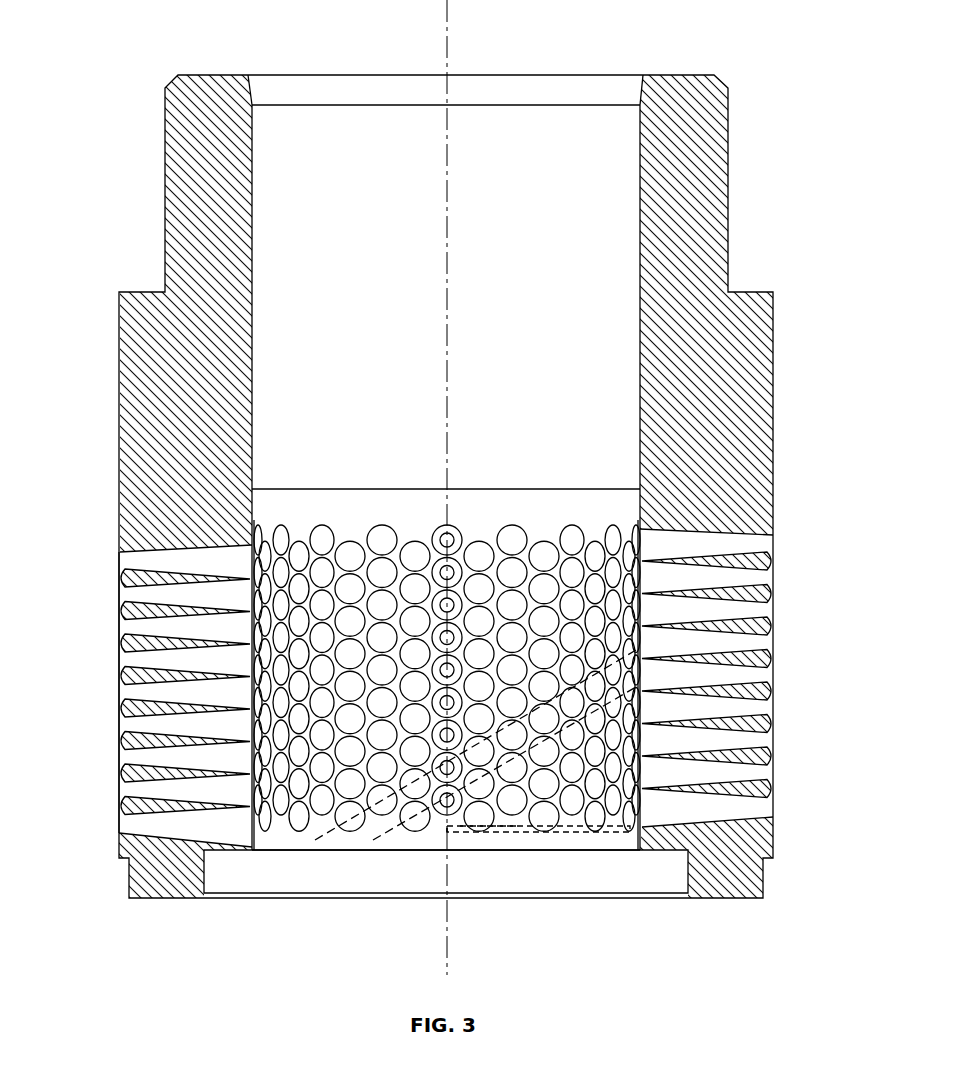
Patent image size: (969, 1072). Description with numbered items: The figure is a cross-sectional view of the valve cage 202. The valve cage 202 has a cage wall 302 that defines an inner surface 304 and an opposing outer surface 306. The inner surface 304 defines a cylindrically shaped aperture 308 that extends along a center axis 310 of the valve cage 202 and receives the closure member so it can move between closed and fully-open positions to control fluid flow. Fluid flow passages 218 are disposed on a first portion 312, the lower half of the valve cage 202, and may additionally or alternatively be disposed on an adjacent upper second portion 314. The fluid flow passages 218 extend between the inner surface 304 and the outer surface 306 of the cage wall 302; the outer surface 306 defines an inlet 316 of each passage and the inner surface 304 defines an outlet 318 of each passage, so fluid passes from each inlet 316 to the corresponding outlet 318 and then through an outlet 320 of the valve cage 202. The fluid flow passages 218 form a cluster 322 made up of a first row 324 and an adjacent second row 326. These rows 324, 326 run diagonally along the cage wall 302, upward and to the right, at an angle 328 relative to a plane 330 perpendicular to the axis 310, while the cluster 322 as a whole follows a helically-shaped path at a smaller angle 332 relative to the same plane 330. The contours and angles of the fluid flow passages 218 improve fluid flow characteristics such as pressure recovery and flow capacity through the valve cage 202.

The valve cage 202 is at (720, 32).
The fluid flow passages 218 is at (510, 537).
The cage wall 302 is at (196, 74).
The inner surface 304 is at (252, 408).
The outer surface 306 is at (119, 437).
The aperture 308 is at (355, 125).
The center axis 310 is at (446, 22).
The first portion 312 is at (778, 900).
The second portion 314 is at (768, 112).
The inlet 316 is at (119, 627).
The outlet 318 is at (240, 655).
The outlet 320 is at (637, 920).
The cluster 322 is at (382, 512).
The row 324 is at (327, 837).
The row 326 is at (383, 837).
The angle 328 is at (486, 834).
The plane 330 is at (450, 835).
The angle 332 is at (573, 834).